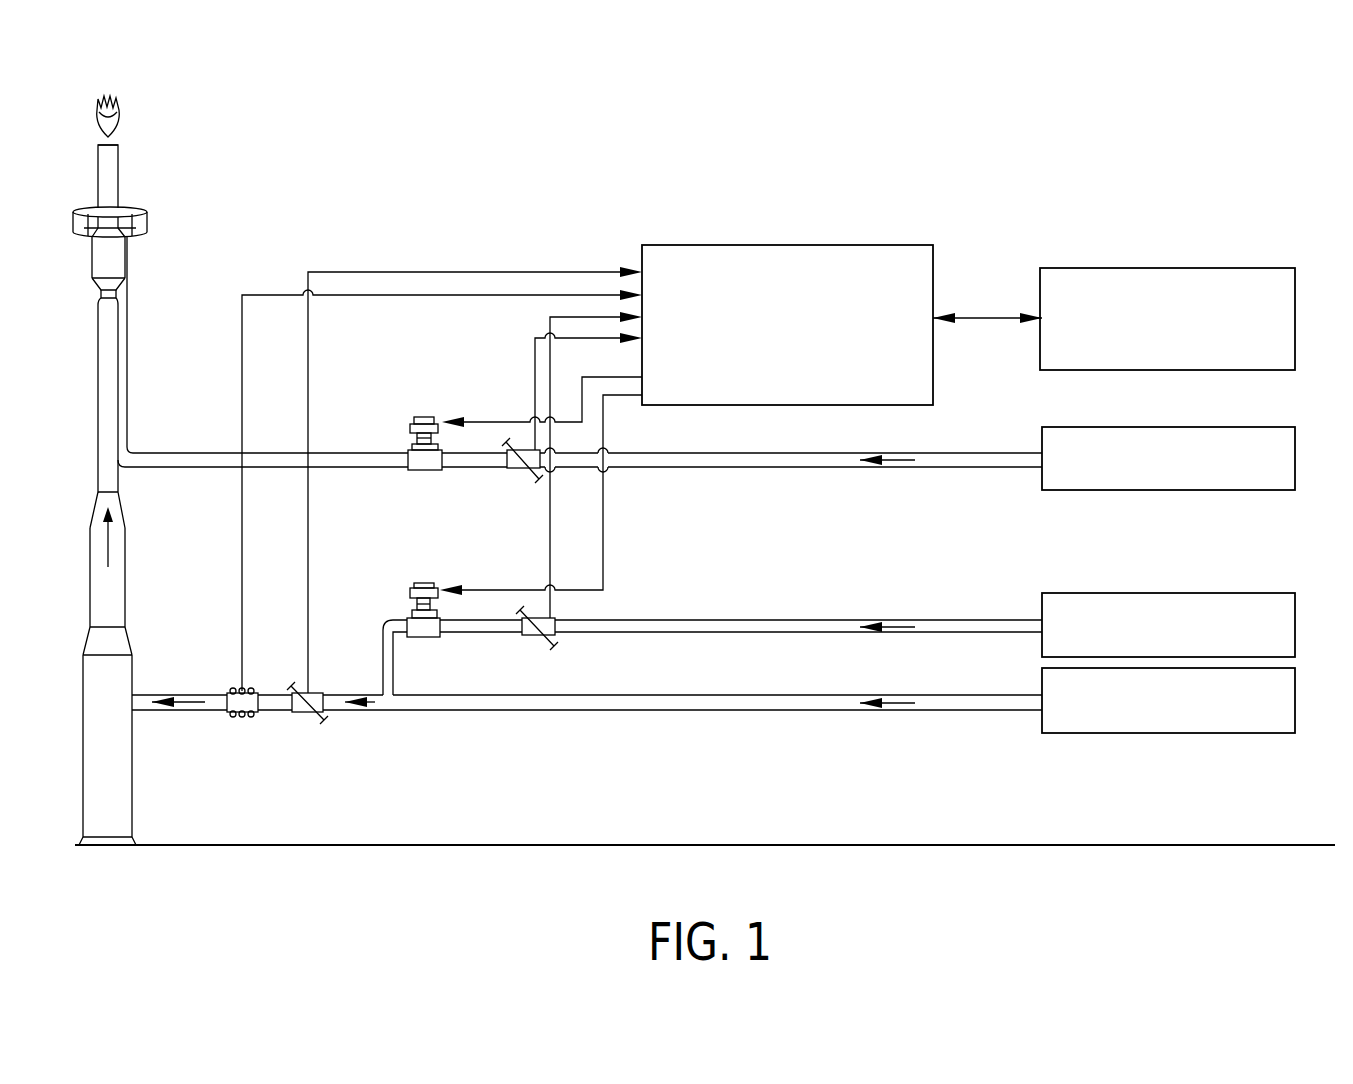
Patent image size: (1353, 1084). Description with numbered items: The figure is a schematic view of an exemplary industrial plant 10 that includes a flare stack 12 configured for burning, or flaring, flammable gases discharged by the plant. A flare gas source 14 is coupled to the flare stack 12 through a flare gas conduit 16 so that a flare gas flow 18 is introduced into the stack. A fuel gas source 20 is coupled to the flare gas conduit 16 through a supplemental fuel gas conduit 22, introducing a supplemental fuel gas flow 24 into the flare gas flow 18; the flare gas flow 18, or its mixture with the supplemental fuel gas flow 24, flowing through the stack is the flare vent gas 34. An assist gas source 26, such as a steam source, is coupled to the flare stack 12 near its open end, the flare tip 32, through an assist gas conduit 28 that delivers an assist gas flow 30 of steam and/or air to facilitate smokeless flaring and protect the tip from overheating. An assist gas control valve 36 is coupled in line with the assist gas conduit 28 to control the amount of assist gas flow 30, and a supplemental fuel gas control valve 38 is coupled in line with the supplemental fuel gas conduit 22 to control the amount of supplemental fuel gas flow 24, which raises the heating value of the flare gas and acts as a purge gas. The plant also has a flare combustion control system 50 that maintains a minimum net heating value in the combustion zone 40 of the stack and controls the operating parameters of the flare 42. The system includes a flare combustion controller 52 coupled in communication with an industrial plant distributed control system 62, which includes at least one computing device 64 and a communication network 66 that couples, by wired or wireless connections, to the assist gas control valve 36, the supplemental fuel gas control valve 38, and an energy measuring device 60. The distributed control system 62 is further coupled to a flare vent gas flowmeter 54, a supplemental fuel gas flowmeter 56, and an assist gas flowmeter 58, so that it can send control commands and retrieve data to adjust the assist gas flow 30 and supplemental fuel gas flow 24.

The industrial plant 10 is at (531, 140).
The flare stack 12 is at (152, 598).
The flare gas source 14 is at (1192, 726).
The flare gas conduit 16 is at (768, 712).
The flare gas flow 18 is at (897, 697).
The fuel gas source 20 is at (1192, 649).
The supplemental fuel gas conduit 22 is at (968, 620).
The supplemental fuel gas flow 24 is at (890, 620).
The assist gas source 26 is at (1192, 483).
The assist gas conduit 28 is at (953, 452).
The assist gas flow 30 is at (893, 467).
The flare tip 32 is at (118, 146).
The flare vent gas 34 is at (112, 548).
The assist gas control valve 36 is at (412, 418).
The supplemental fuel gas control valve 38 is at (413, 586).
The combustion zone 40 is at (146, 100).
The flare 42 is at (108, 94).
The flare combustion control system 50 is at (1043, 200).
The flare combustion controller 52 is at (1190, 362).
The flare vent gas flowmeter 54 is at (312, 714).
The supplemental fuel gas flowmeter 56 is at (535, 640).
The assist gas flowmeter 58 is at (513, 470).
The energy measuring device 60 is at (242, 688).
The industrial plant distributed control system (DCS) 62 is at (619, 236).
The computing device 64 is at (793, 390).
The communication network 66 is at (336, 250).